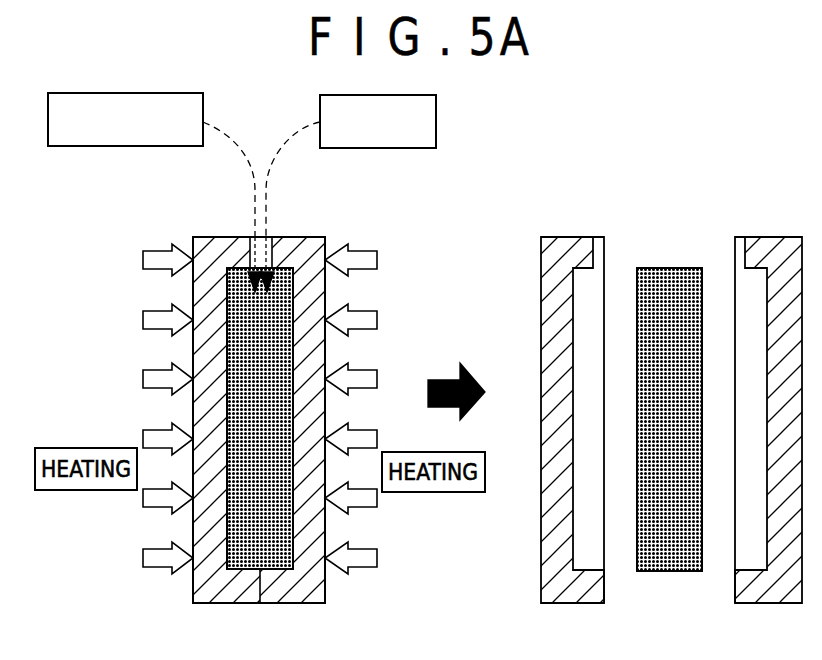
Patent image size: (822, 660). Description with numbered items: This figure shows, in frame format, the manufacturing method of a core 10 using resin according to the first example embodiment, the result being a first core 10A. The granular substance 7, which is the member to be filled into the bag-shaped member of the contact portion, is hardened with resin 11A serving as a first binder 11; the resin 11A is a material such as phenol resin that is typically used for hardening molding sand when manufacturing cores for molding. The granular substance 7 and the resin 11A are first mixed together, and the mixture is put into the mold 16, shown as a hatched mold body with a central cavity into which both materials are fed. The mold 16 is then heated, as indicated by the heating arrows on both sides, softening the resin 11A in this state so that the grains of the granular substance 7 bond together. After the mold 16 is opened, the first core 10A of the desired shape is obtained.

The granular substance 7 is at (127, 146).
The mold 16 is at (227, 228).
The resin 11A is at (348, 193).
The first binder 11 is at (377, 150).
The first core 10A is at (473, 376).
The core 10 is at (667, 268).